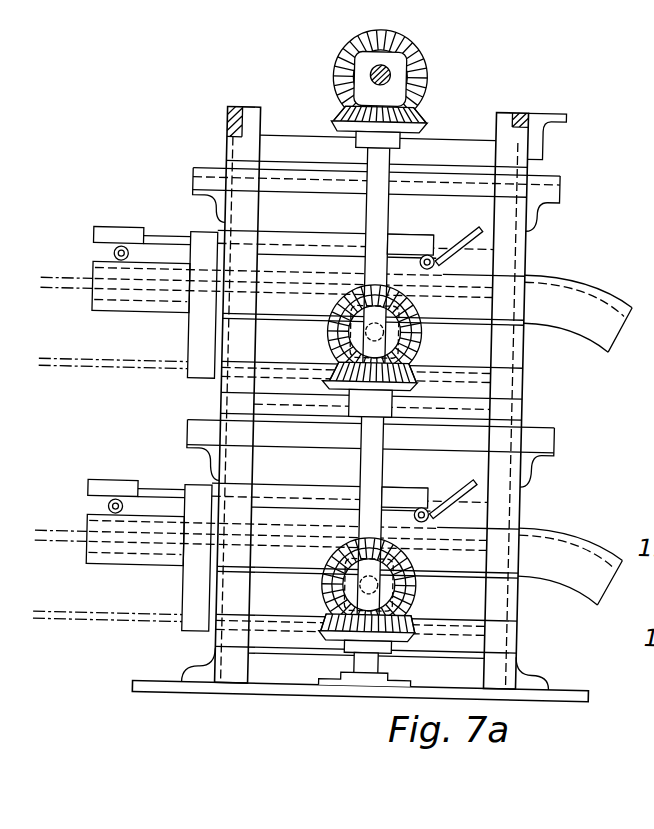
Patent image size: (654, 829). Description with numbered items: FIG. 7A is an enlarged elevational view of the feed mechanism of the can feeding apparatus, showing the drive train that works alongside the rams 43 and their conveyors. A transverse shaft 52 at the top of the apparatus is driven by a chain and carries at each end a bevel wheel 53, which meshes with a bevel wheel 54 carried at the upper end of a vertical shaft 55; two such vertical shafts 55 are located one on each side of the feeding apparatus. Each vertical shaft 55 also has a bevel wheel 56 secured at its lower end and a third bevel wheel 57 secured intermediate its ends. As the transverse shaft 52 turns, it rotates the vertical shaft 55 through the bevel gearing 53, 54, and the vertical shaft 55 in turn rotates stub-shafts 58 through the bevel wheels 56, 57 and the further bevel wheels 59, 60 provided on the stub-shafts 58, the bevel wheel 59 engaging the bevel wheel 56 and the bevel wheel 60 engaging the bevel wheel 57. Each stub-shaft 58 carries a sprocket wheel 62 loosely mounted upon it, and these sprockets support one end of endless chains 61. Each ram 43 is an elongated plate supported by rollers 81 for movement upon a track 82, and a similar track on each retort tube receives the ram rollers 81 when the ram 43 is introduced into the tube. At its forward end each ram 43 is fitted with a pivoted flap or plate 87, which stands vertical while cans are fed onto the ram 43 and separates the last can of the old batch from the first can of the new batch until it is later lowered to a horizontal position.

The ram 43 is at (126, 233).
The transverse shaft 52 is at (366, 70).
The bevel wheel 53 is at (414, 53).
The bevel wheel 54 is at (336, 108).
The vertical shaft 55 is at (362, 212).
The bevel wheel 56 is at (404, 640).
The third bevel wheel 57 is at (416, 380).
The stub-shaft 58 is at (328, 337).
The bevel wheel 59 is at (419, 593).
The bevel wheel 60 is at (407, 300).
The endless chain 61 is at (69, 297).
The sprocket wheel 62 is at (420, 338).
The roller 81 is at (110, 258).
The track 82 is at (150, 310).
The pivoted flap or plate 87 is at (453, 247).